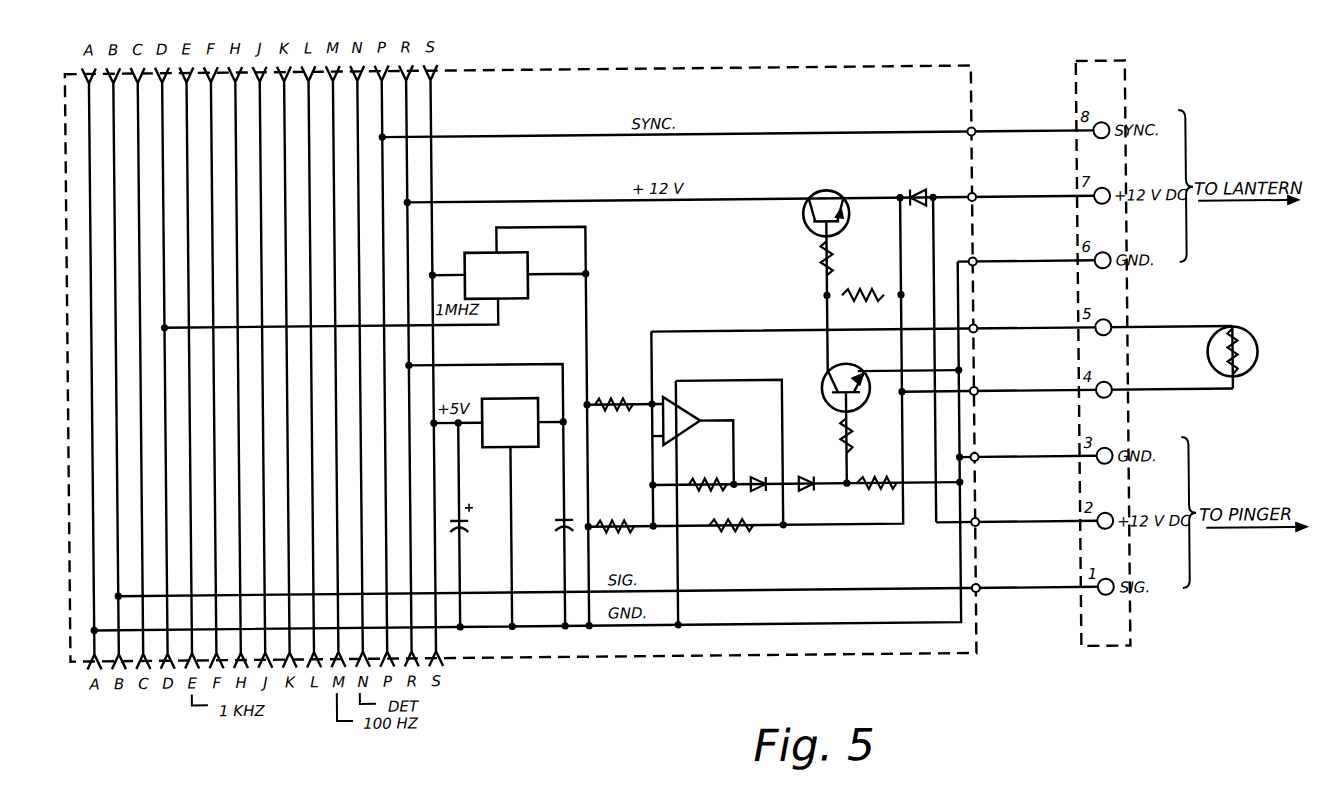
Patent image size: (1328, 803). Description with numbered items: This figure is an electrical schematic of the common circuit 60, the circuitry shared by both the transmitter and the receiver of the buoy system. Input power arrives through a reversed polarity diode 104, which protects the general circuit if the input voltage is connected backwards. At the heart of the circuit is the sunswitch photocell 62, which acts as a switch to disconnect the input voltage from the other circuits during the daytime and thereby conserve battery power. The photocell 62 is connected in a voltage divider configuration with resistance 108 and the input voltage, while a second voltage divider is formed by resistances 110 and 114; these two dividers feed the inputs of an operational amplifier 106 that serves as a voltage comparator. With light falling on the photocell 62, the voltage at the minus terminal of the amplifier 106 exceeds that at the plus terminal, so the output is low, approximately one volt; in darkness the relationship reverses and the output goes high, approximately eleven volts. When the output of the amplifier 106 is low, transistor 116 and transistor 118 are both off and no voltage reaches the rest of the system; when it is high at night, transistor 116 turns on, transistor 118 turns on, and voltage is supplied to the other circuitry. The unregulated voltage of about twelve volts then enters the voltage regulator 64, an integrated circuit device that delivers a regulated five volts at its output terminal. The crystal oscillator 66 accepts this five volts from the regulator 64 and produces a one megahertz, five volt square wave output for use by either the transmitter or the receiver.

The common circuit 60 is at (718, 66).
The sunswitch photocell 62 is at (1206, 359).
The voltage regulator 64 is at (521, 429).
The crystal oscillator 66 is at (507, 282).
The reversed polarity diode 104 is at (913, 188).
The operational amplifier 106 is at (690, 412).
The resistance 108 is at (623, 398).
The resistance 110 is at (621, 522).
The resistance 114 is at (724, 534).
The transistor 116 is at (822, 380).
The transistor 118 is at (800, 216).